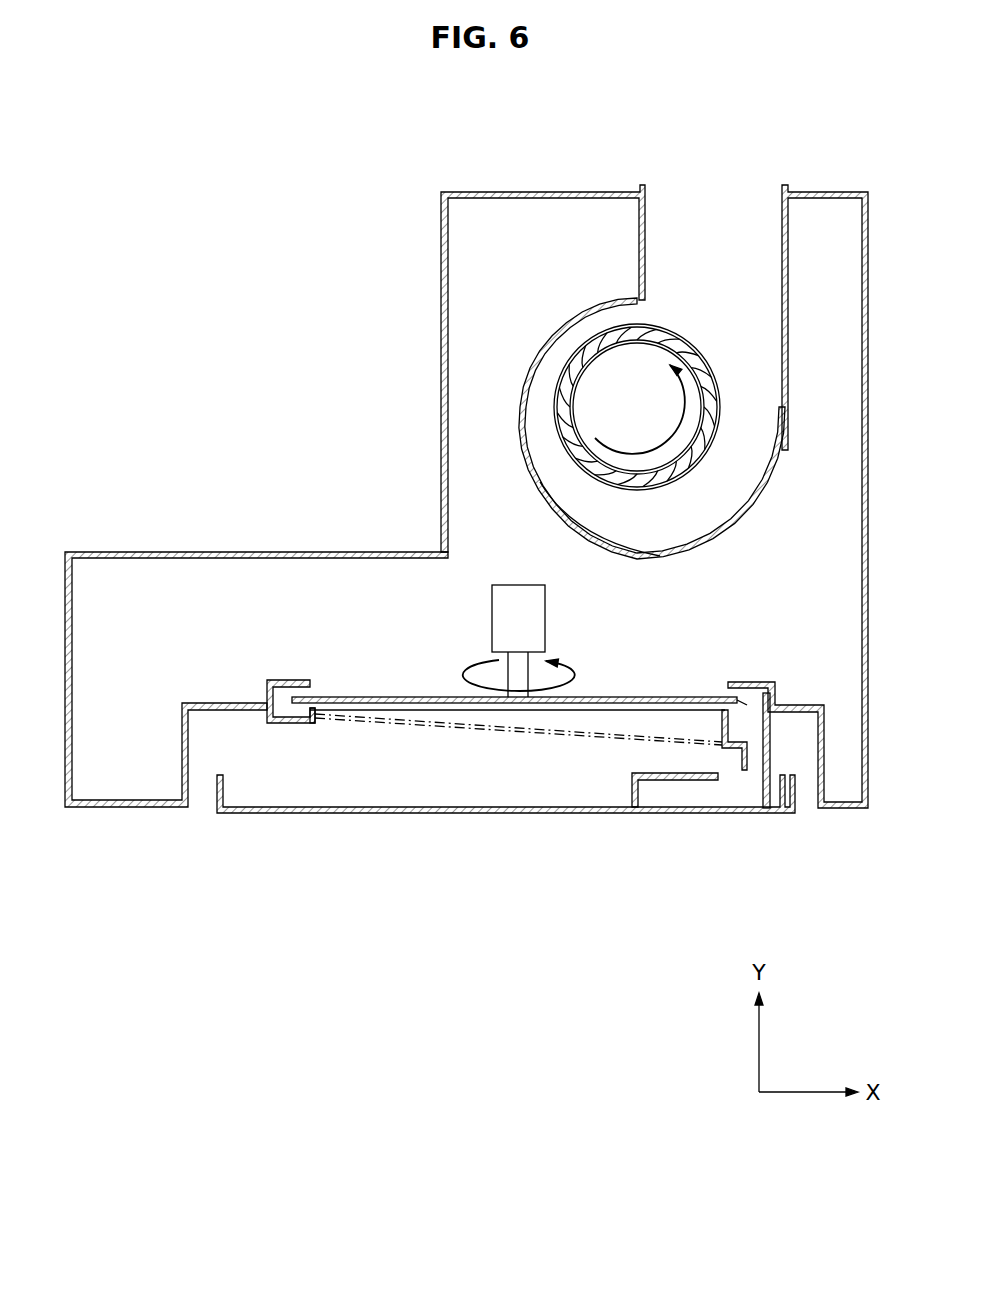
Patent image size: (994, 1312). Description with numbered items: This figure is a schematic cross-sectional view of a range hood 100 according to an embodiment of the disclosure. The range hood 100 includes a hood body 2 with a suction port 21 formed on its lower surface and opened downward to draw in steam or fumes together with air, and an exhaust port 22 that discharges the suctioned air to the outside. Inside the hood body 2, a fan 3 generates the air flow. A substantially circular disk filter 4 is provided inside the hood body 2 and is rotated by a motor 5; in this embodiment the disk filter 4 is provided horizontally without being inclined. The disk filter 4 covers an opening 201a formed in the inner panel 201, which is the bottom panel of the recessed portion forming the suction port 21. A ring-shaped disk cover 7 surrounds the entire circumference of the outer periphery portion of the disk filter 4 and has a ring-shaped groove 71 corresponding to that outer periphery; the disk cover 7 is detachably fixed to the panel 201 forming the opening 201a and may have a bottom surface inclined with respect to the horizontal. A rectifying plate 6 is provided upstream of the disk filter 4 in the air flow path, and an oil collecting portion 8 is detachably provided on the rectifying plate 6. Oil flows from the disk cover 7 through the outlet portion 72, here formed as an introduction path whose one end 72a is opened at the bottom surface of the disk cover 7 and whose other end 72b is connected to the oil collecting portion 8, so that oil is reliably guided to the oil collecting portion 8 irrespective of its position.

The range hood 100 is at (207, 161).
The hood body 2 is at (441, 343).
The exhaust port 22 is at (697, 180).
The fan 3 is at (670, 327).
The motor 5 is at (543, 618).
The inner panel 201 is at (223, 710).
The opening 201a is at (362, 686).
The ring-shaped groove 71 is at (284, 708).
The disk filter 4 is at (422, 703).
The disk cover 7 is at (295, 727).
The one end of the introduction path 72a is at (313, 722).
The outlet portion 72 is at (753, 760).
The other end of the introduction path 72b is at (767, 773).
The rectifying plate 6 is at (475, 813).
The oil collecting portion 8 is at (618, 813).
The suction port 21 is at (200, 817).